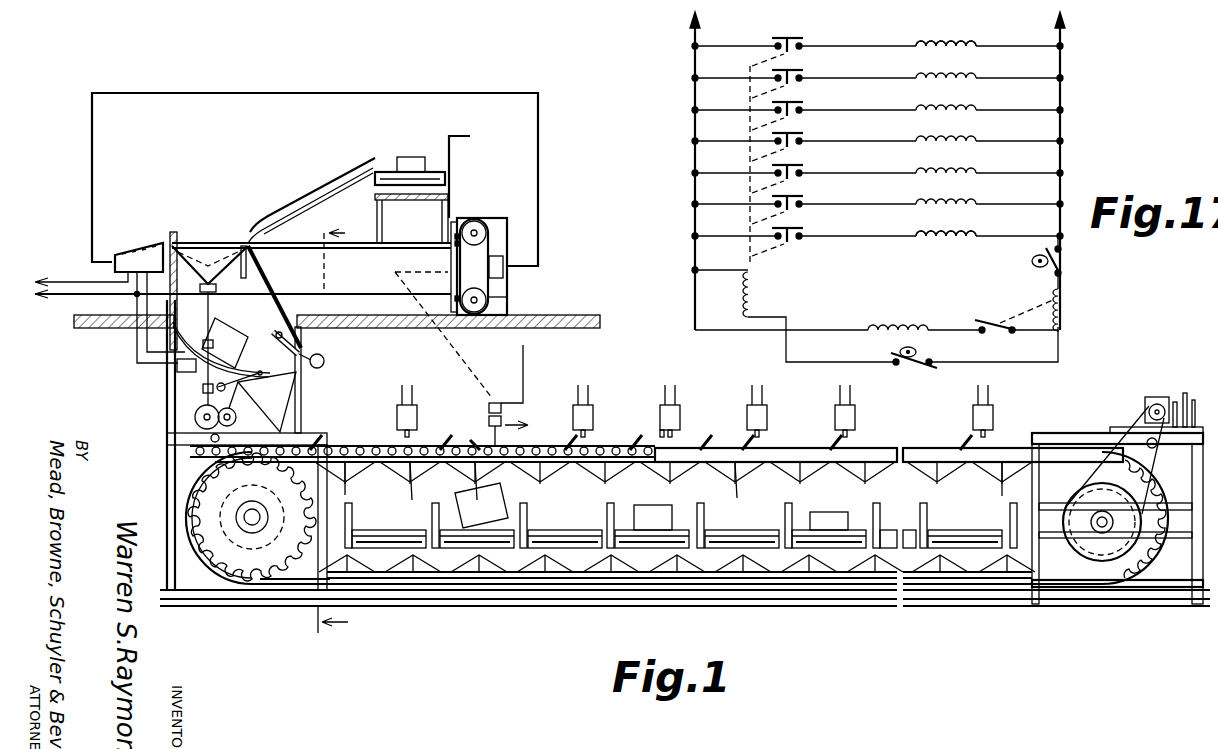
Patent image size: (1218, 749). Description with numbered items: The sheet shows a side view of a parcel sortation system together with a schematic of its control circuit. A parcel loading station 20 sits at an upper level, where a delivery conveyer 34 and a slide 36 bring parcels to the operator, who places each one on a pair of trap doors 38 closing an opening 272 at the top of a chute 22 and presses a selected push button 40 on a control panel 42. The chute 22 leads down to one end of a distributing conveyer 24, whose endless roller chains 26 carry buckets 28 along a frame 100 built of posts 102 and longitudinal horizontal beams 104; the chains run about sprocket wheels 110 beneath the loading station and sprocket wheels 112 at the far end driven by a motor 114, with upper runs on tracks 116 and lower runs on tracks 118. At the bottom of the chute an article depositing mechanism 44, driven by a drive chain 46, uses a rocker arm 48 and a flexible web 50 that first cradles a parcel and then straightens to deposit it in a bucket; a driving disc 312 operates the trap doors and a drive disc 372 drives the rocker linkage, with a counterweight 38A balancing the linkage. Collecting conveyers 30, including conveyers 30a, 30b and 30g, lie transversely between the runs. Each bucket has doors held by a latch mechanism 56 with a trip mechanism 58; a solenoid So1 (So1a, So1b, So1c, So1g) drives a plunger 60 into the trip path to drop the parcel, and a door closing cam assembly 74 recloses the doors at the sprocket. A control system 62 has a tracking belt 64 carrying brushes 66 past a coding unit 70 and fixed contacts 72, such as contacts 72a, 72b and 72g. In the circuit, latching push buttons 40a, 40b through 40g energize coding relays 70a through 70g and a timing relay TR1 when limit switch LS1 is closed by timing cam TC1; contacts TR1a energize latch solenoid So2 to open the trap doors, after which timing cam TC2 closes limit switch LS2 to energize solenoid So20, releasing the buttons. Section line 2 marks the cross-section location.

In FIG. 1, the parcel loading station 20 is at (422, 138).
In FIG. 1, the chute 22 is at (268, 288).
In FIG. 1, the distributing conveyer 24 is at (352, 448).
In FIG. 1, the roller chains 26 is at (404, 442).
In FIG. 1, the buckets 28 is at (345, 470).
In FIG. 1, the collecting conveyers 30 is at (585, 486).
In FIG. 1, the collecting conveyer 30a is at (395, 538).
In FIG. 1, the collecting conveyer 30b is at (505, 536).
In FIG. 1, the collecting conveyer 30g is at (948, 536).
In FIG. 1, the delivery conveyer 34 is at (392, 170).
In FIG. 1, the slide 36 is at (328, 186).
In FIG. 1, the trap doors 38 is at (248, 270).
In FIG. 1, the knob 38A is at (325, 360).
In FIG. 1, the push button 40 is at (148, 250).
In FIG. 1, the control panel 42 is at (112, 272).
In FIG. 1, the article depositing mechanism 44 is at (300, 392).
In FIG. 1, the drive chain 46 is at (262, 478).
In FIG. 1, the rocker arm 48 is at (245, 390).
In FIG. 1, the flexible web 50 is at (260, 350).
In FIG. 1, the latch mechanism 56 is at (670, 484).
In FIG. 1, the trip mechanism 58 is at (430, 440).
In FIG. 1, the plunger 60 is at (676, 436).
In FIG. 1, the control system 62 is at (512, 218).
In FIG. 1, the tracking belt 64 is at (484, 245).
In FIG. 1, the brushes 66 is at (508, 297).
In FIG. 1, the coding unit 70 is at (504, 276).
In FIG. 17, the coding relay 70a is at (962, 24).
In FIG. 17, the coding relay 70g is at (975, 228).
In FIG. 1, the fixed contacts 72 is at (448, 258).
In FIG. 1, the fixed contact 72a is at (455, 236).
In FIG. 1, the fixed contact 72b is at (455, 243).
In FIG. 1, the fixed contact 72g is at (455, 299).
In FIG. 1, the door closing cam assembly 74 is at (1102, 522).
In FIG. 1, the frame 100 is at (770, 607).
In FIG. 1, the posts 102 is at (165, 406).
In FIG. 1, the longitudinal horizontal beams 104 is at (292, 432).
In FIG. 1, the sprocket wheels 110 is at (195, 510).
In FIG. 1, the sprocket wheels 112 is at (1105, 586).
In FIG. 1, the motor 114 is at (1162, 404).
In FIG. 1, the tracks 116 is at (395, 468).
In FIG. 1, the tracks 118 is at (395, 590).
In FIG. 1, the opening 272 is at (220, 240).
In FIG. 1, the driving disc 312 is at (205, 430).
In FIG. 1, the drive disc 372 is at (232, 422).
In FIG. 17, the push button 40a is at (802, 38).
In FIG. 17, the push button 40b is at (802, 70).
In FIG. 17, the push button 40g is at (802, 228).
In FIG. 1, the solenoid So1 is at (720, 378).
In FIG. 1, the solenoid So1a is at (417, 410).
In FIG. 1, the solenoid So1b is at (488, 406).
In FIG. 1, the solenoid So1c is at (595, 410).
In FIG. 1, the solenoid So1g is at (994, 410).
In FIG. 17, the latch solenoid So2 is at (906, 324).
In FIG. 1, the latch solenoid So2 is at (180, 370).
In FIG. 17, the solenoid So20 is at (760, 292).
In FIG. 17, the timing cam TC1 is at (1032, 260).
In FIG. 17, the timing cam TC2 is at (916, 352).
In FIG. 17, the timing relay TR1 is at (1066, 302).
In FIG. 17, the timing relay contacts TR1a is at (992, 322).
In FIG. 17, the limit switch LS1 is at (1054, 264).
In FIG. 17, the limit switch LS2 is at (896, 368).
In FIG. 1, the section line 2 is at (333, 432).